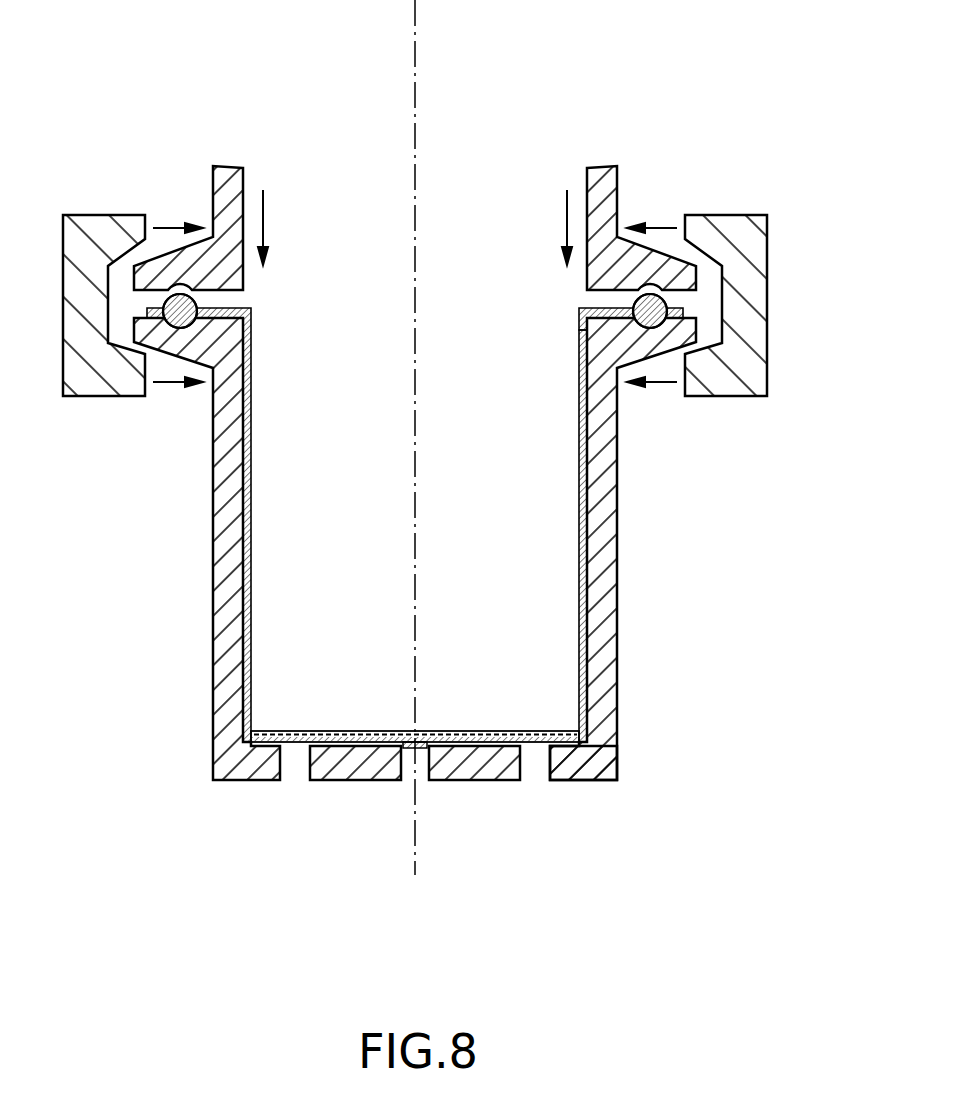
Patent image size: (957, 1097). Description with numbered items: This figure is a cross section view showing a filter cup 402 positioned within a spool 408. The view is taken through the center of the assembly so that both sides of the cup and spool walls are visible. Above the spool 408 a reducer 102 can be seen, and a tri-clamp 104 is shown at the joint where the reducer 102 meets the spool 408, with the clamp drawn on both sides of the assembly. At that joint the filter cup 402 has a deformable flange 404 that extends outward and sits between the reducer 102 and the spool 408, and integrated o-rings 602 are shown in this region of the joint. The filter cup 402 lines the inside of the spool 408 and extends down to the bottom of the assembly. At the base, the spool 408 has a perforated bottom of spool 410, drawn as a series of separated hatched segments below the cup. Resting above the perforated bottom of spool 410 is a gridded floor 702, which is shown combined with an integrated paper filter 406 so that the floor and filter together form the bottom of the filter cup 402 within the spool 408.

The reducer 102 is at (217, 181).
The tri-clamp 104 is at (767, 297).
The filter cup 402 is at (580, 487).
The deformable flange 404 is at (620, 313).
The integrated paper filter 406 is at (553, 732).
The spool 408 is at (612, 580).
The perforated bottom of spool 410 is at (613, 770).
The integrated o-rings 602 is at (653, 308).
The gridded floor 702 is at (524, 740).